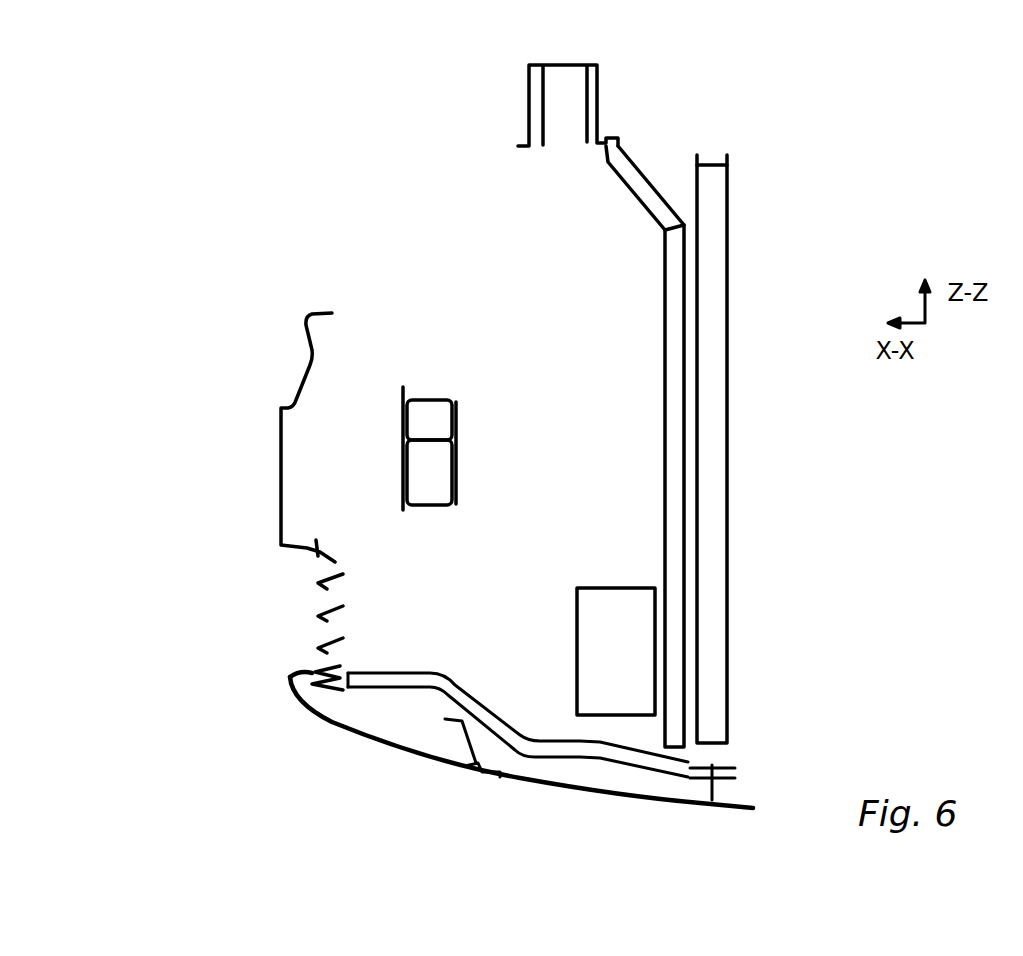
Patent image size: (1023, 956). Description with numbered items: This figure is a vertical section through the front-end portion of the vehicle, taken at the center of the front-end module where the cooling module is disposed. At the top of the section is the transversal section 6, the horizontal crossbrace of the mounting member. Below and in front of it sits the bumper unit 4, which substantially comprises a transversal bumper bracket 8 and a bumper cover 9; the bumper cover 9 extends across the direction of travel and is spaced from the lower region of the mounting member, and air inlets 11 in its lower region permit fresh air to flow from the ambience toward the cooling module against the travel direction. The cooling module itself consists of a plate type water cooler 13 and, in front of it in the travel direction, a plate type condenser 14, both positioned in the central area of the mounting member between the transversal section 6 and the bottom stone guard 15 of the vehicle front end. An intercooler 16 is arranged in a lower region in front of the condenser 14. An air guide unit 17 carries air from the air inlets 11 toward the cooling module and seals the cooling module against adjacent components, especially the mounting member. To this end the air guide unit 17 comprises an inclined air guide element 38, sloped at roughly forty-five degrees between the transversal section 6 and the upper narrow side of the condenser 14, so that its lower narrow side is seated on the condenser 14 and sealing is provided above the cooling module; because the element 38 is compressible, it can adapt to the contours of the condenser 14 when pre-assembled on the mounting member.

The bumper unit 4 is at (236, 419).
The transversal section 6 is at (500, 118).
The bumper bracket 8 is at (456, 485).
The bumper cover 9 is at (278, 475).
The air inlets 11 is at (285, 624).
The water cooler 13 is at (727, 410).
The condenser 14 is at (668, 370).
The bottom stone guard 15 is at (405, 760).
The intercooler 16 is at (576, 650).
The air guide unit 17 is at (537, 222).
The inclined air guide element 38 is at (646, 181).